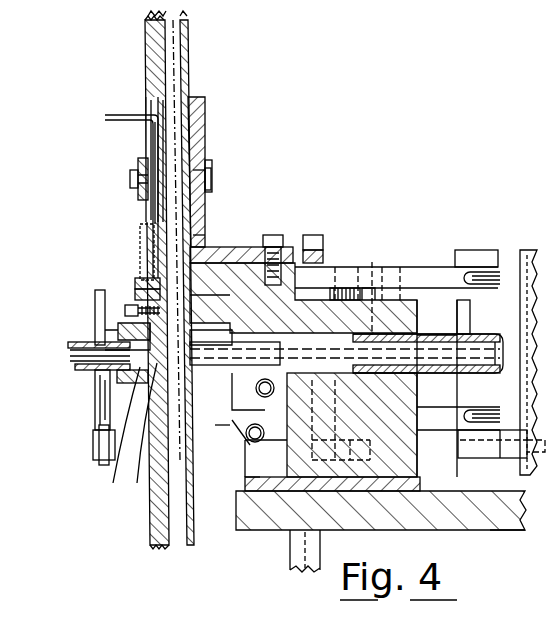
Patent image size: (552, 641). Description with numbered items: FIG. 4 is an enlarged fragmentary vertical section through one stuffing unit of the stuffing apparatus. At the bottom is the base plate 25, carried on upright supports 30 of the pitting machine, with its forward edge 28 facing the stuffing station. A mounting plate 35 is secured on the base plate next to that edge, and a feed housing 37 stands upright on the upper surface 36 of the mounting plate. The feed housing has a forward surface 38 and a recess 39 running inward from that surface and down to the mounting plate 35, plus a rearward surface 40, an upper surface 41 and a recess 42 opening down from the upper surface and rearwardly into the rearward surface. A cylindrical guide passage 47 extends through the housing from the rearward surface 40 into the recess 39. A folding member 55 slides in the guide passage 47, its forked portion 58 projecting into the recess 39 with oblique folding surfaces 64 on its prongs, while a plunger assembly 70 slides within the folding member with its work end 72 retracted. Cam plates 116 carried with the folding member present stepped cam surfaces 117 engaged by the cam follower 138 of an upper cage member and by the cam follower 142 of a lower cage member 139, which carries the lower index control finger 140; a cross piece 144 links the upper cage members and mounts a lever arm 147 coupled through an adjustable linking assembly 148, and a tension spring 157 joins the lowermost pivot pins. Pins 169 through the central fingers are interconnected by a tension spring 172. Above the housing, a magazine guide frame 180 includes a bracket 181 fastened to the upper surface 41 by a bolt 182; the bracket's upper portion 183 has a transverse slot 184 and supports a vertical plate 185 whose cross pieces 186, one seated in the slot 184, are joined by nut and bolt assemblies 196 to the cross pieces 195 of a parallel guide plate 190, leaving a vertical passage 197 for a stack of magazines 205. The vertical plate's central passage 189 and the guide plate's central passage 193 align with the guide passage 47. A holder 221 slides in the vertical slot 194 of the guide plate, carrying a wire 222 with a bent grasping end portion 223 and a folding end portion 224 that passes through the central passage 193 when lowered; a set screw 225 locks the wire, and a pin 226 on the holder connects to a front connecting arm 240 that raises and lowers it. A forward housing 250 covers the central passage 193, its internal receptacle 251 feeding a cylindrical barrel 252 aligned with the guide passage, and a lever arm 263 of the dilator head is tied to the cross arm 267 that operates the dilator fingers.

The base plate 25 is at (488, 548).
The forward edge 28 is at (236, 514).
The upright supports 30 is at (290, 550).
The mounting plate 35 is at (246, 490).
The upper surface 36 is at (245, 478).
The feed housing 37 is at (372, 300).
The forward surface 38 is at (200, 248).
The recess 39 is at (266, 458).
The rearward surface 40 is at (424, 322).
The upper surface 41 is at (244, 250).
The recess 42 is at (300, 262).
The cylindrical guide passage 47 is at (348, 370).
The folding member 55 is at (470, 314).
The forked portion 58 is at (370, 298).
The oblique folding surface 64 is at (210, 342).
The plunger assembly 70 is at (496, 344).
The work end 72 is at (258, 392).
The cam plates 116 is at (470, 250).
The cam surfaces 117 is at (496, 386).
The cam follower 138 is at (524, 252).
The lower cage members 139 is at (430, 272).
The lower index control finger 140 is at (218, 432).
The cam follower 142 is at (510, 430).
The cross piece 144 is at (336, 286).
The lever arm 147 is at (346, 400).
The adjustable linking assembly 148 is at (444, 456).
The tension spring 157 is at (280, 445).
The pins 169 is at (280, 356).
The tension spring 172 is at (276, 414).
The magazine guide frame 180 is at (215, 66).
The bracket 181 is at (202, 212).
The bolt 182 is at (273, 235).
The upper portion 183 is at (206, 128).
The slot 184 is at (200, 192).
The vertical plate 185 is at (190, 92).
The cross pieces 186 is at (208, 162).
The central passage 189 is at (196, 318).
The guide plate 190 is at (150, 68).
The central passage 193 is at (72, 354).
The vertical slot 194 is at (146, 102).
The cross pieces 195 is at (138, 160).
The nut and bolt assemblies 196 is at (212, 172).
The vertical passage 197 is at (178, 50).
The magazines 205 is at (160, 18).
The holder 221 is at (152, 228).
The wire 222 is at (153, 140).
The grasping end portion 223 is at (105, 117).
The folding end portion 224 is at (120, 330).
The set screw 225 is at (125, 310).
The pin 226 is at (135, 282).
The front connecting arm 240 is at (138, 258).
The forward housing 250 is at (128, 470).
The internal receptacle 251 is at (155, 490).
The cylindrical barrel 252 is at (90, 370).
The lever arm 263 is at (97, 425).
The cross arm 267 is at (105, 462).